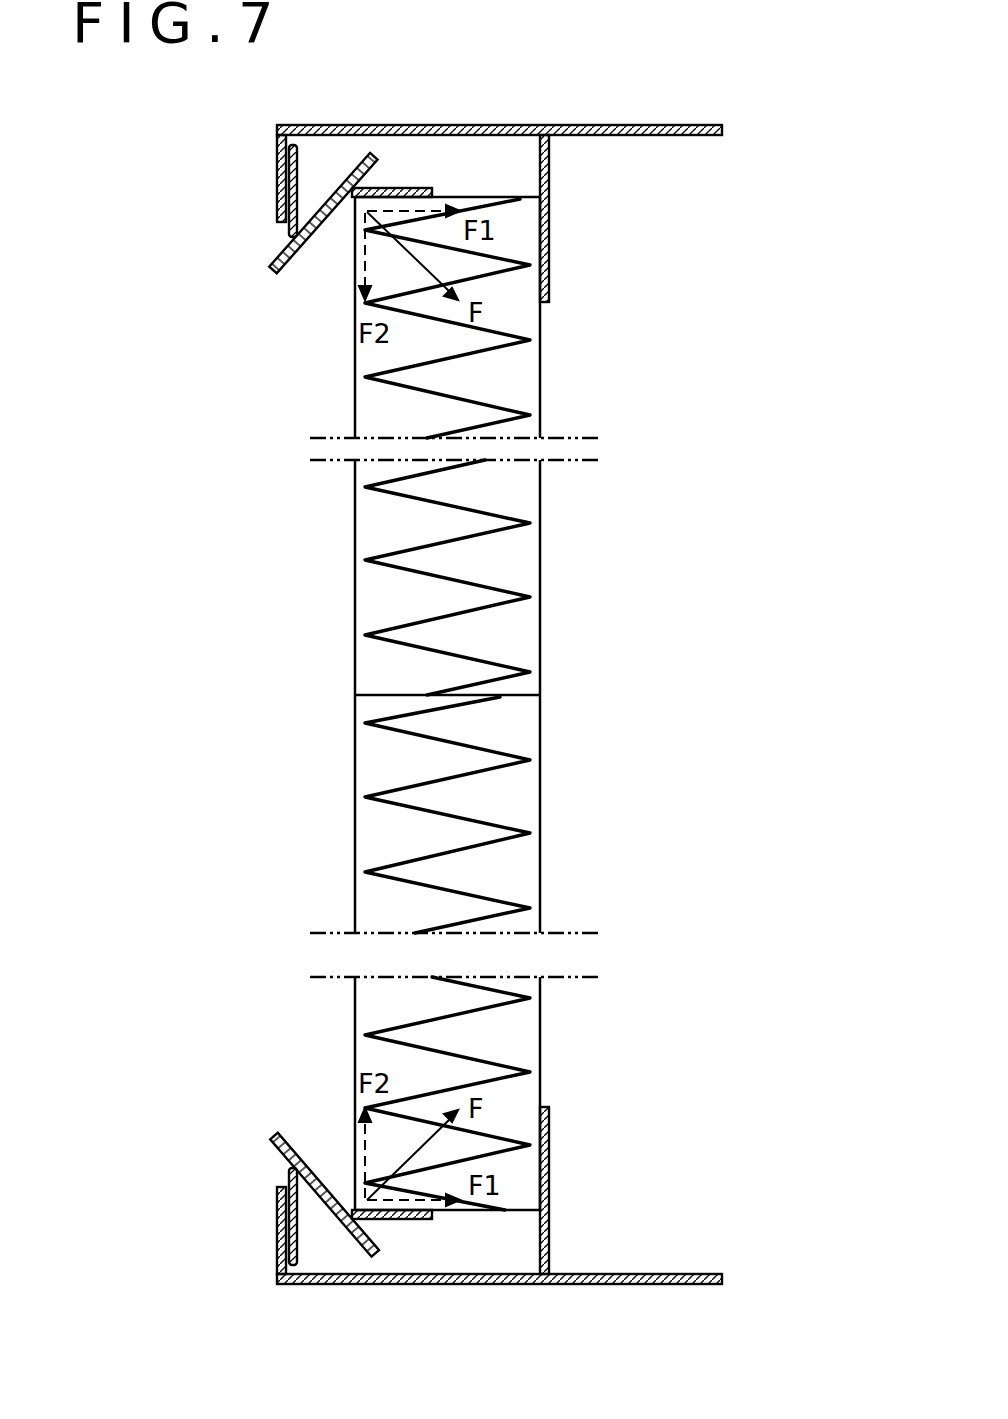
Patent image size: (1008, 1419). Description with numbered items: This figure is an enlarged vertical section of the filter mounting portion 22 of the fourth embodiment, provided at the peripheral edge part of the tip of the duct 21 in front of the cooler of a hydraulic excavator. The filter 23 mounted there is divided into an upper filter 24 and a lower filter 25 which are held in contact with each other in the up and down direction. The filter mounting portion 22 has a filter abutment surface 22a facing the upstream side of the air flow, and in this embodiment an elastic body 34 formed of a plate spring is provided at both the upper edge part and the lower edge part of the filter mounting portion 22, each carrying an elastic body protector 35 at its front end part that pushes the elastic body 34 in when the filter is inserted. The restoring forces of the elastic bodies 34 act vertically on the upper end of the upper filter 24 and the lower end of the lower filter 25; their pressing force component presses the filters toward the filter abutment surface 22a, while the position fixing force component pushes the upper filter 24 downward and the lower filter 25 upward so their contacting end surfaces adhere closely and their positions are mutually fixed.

The duct 21 is at (640, 124).
The filter mounting portion 22 is at (342, 124).
The filter abutment surface 22a is at (540, 172).
The filter 23 is at (637, 587).
The upper filter 24 is at (548, 607).
The lower filter 25 is at (548, 782).
The elastic body 34 is at (287, 238).
The elastic body protector 35 is at (298, 258).